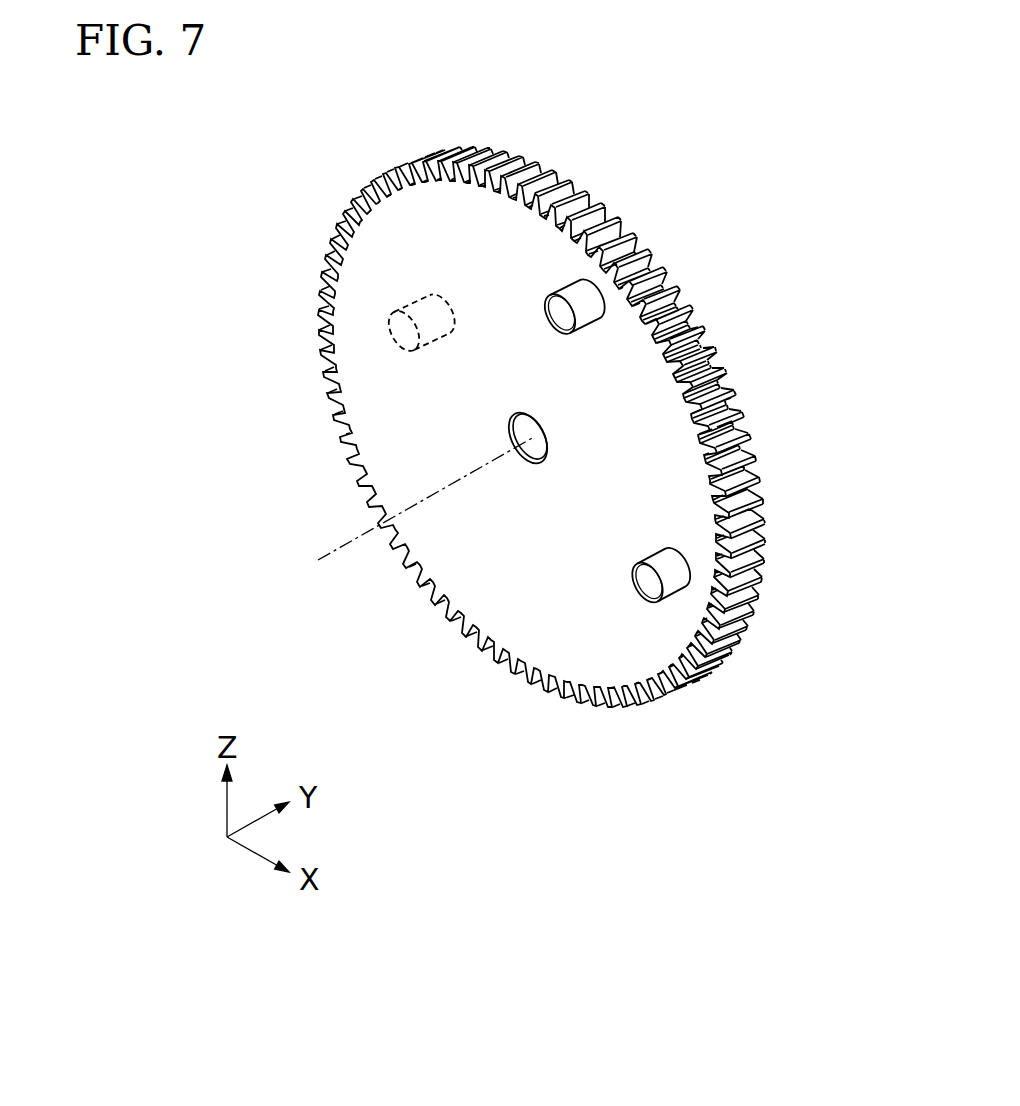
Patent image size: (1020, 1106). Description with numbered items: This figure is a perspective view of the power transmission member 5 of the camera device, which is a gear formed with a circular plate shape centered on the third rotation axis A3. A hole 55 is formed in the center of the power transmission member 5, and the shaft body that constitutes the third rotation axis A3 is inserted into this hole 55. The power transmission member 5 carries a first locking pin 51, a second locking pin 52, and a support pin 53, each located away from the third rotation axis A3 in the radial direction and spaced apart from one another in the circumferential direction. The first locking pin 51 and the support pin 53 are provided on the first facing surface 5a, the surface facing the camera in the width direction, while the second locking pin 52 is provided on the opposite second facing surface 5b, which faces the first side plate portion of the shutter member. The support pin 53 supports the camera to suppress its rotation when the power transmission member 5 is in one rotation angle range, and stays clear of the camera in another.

The power transmission member 5 is at (543, 433).
The first facing surface 5a is at (552, 640).
The second facing surface 5b is at (474, 224).
The first locking pin 51 is at (560, 292).
The second locking pin 52 is at (410, 304).
The support pin 53 is at (678, 585).
The hole 55 is at (534, 428).
The third rotation axis A3 is at (350, 543).